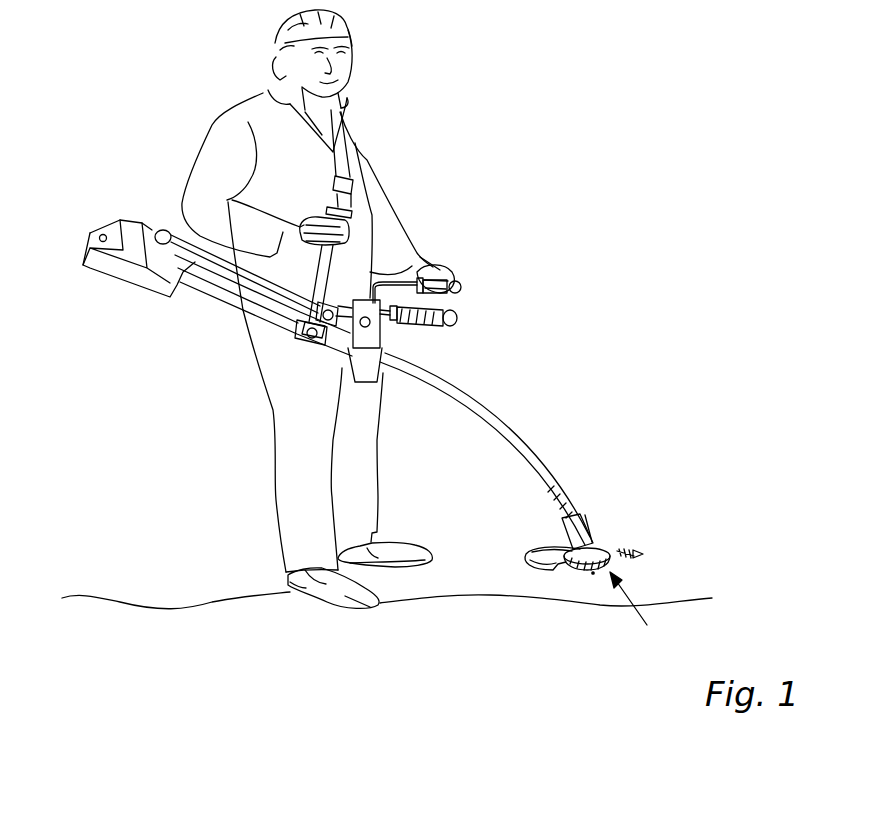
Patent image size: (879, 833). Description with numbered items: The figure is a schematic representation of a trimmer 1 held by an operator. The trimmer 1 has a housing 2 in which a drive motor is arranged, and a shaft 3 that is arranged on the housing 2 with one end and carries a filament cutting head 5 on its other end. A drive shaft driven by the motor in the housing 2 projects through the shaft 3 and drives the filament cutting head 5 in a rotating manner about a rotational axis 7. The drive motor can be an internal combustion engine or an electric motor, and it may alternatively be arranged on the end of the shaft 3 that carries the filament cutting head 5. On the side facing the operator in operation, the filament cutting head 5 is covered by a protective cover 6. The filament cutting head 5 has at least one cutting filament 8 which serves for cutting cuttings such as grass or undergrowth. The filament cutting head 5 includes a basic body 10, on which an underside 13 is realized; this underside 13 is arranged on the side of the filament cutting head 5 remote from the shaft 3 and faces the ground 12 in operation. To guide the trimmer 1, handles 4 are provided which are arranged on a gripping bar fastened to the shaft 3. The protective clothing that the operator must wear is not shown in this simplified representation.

The trimmer 1 is at (370, 442).
The housing 2 is at (115, 262).
The shaft 3 is at (553, 470).
The handles 4 is at (462, 312).
The filament cutting head 5 is at (606, 548).
The protective cover 6 is at (528, 553).
The rotational axis 7 is at (601, 588).
The cutting filament 8 is at (640, 552).
The basic body 10 is at (590, 569).
The ground 12 is at (697, 597).
The underside 13 is at (637, 608).